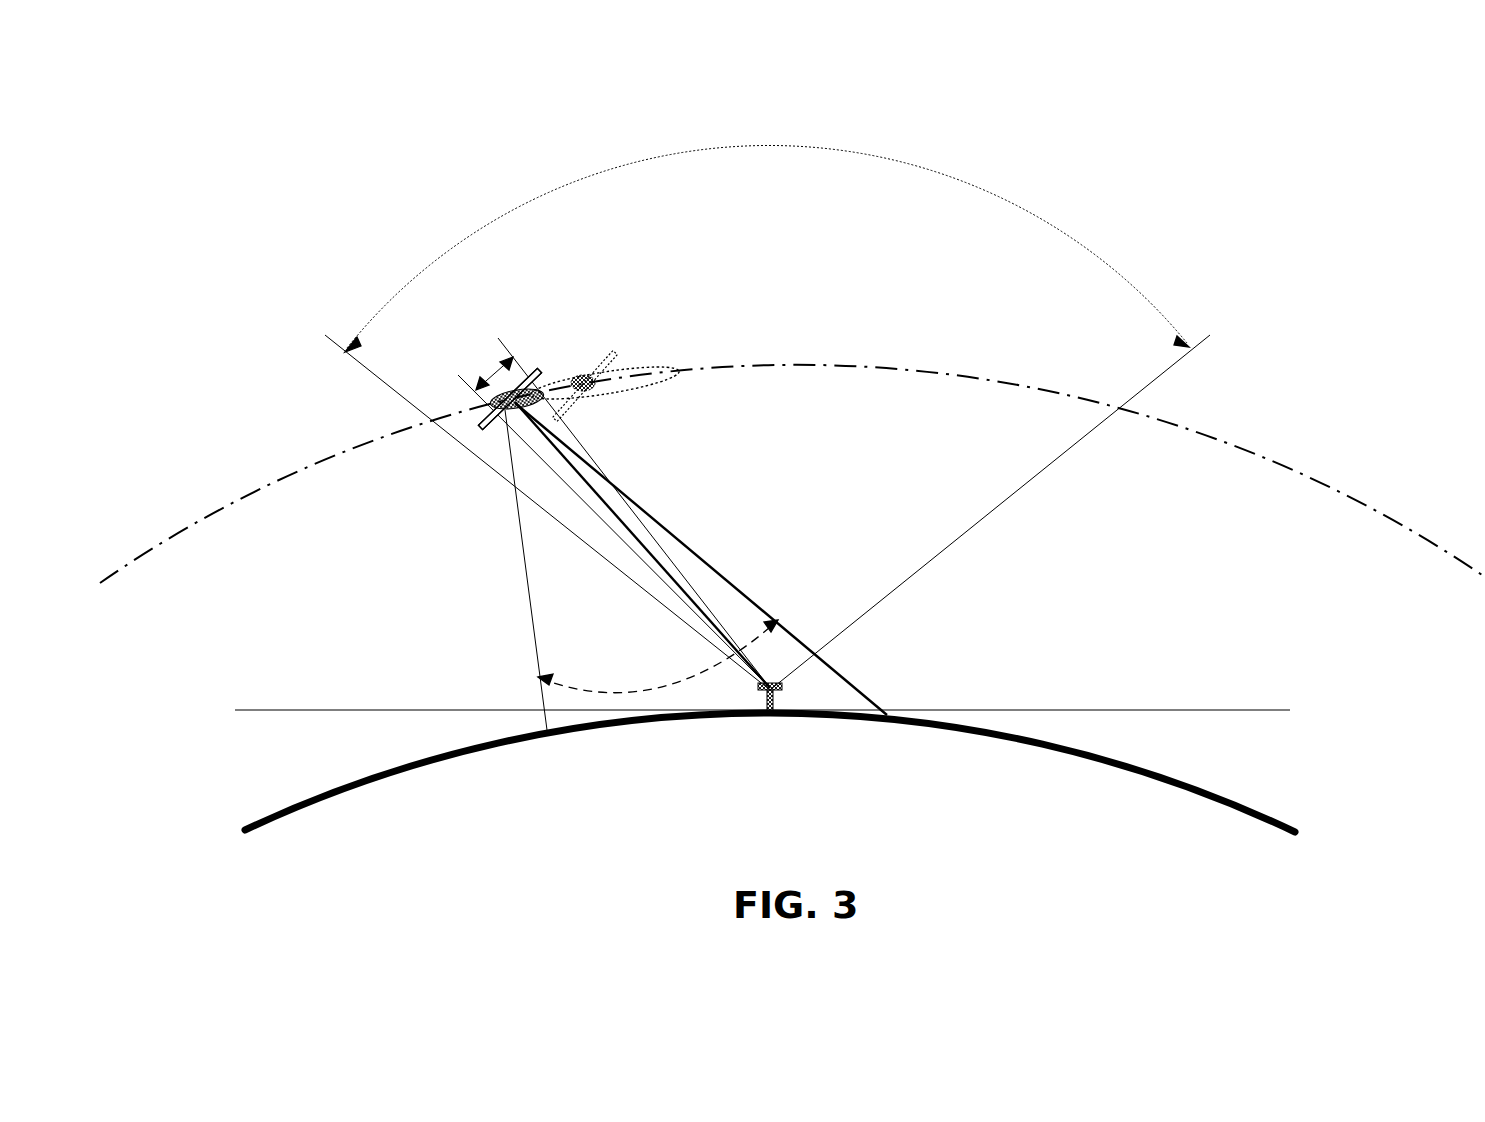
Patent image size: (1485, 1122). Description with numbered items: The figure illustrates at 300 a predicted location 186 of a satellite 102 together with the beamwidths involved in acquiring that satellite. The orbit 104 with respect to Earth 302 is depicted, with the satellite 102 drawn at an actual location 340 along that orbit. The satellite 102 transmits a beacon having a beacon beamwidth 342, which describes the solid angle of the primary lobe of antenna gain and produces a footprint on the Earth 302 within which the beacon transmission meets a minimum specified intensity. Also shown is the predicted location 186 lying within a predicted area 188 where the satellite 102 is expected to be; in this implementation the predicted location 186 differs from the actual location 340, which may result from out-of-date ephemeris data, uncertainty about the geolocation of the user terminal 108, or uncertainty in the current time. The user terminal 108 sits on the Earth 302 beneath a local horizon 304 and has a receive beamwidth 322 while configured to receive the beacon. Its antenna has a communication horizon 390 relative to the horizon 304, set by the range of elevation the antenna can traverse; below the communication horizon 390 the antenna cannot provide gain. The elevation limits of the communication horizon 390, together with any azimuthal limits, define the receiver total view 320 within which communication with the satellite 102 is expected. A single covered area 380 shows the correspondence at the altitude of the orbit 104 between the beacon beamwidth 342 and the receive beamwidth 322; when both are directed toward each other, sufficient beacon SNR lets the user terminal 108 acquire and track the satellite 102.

The illustration of predicted location and beamwidths 300 is at (1291, 104).
The Earth 302 is at (739, 789).
The local horizon 304 is at (833, 714).
The orbit 104 is at (792, 474).
The receiver total view 320 is at (775, 248).
The communication horizon 390 is at (1228, 393).
The receive beamwidth 322 is at (493, 372).
The beacon beamwidth 342 is at (670, 684).
The satellite 102 is at (520, 392).
The covered area 380 is at (545, 407).
The actual location 340 is at (508, 425).
The predicted location 186 is at (584, 375).
The predicted area 188 is at (652, 372).
The user terminal 108 is at (764, 712).